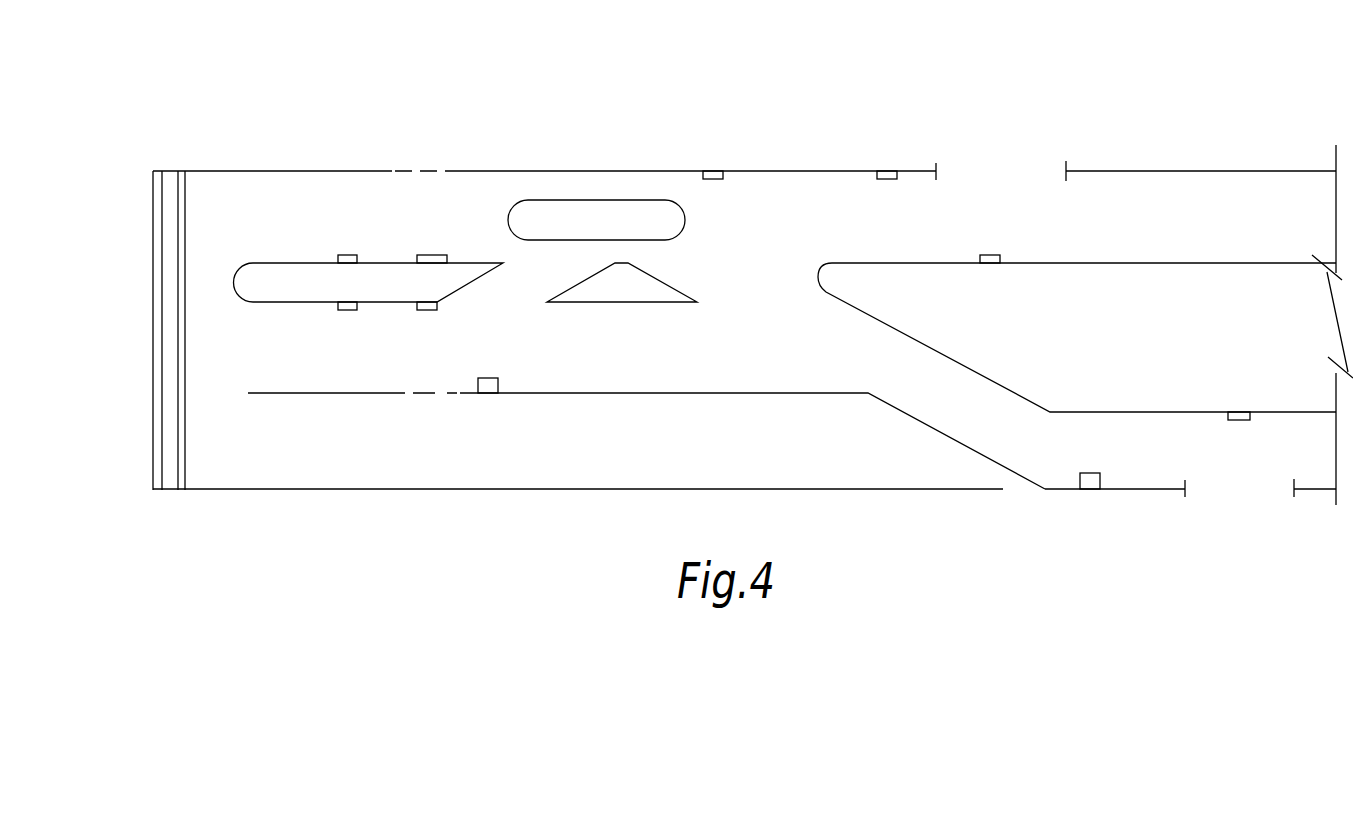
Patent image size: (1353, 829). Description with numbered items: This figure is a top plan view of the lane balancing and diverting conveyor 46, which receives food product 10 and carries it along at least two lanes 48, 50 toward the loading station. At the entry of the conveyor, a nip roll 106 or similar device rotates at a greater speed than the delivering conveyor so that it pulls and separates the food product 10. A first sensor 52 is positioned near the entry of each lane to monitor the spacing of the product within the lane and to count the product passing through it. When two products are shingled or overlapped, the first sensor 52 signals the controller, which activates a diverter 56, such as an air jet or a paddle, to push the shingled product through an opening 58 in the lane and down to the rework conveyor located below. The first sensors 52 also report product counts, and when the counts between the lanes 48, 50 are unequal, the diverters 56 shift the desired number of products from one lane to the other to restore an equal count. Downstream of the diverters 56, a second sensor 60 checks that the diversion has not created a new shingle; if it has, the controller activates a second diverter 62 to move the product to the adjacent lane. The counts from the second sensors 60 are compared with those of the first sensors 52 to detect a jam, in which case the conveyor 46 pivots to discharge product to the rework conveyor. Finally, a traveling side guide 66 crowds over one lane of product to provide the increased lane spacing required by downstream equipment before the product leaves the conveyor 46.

The food product 10 is at (586, 200).
The lane balancing and diverting conveyor 46 is at (713, 82).
The lane 48 is at (257, 190).
The lane 50 is at (220, 350).
The first sensor 52 is at (347, 255).
The diverter 56 is at (440, 255).
The opening 58 is at (428, 171).
The second sensor 60 is at (889, 171).
The second diverter 62 is at (993, 263).
The traveling side guide 66 is at (942, 350).
The nip roll 106 is at (170, 177).